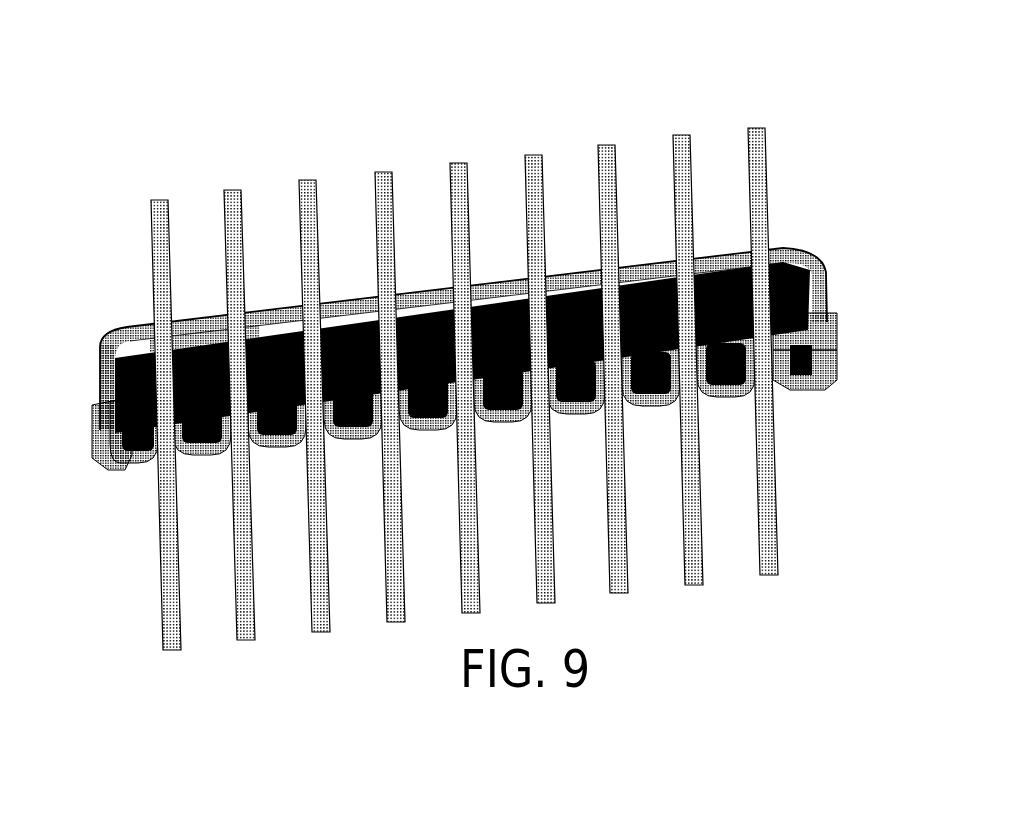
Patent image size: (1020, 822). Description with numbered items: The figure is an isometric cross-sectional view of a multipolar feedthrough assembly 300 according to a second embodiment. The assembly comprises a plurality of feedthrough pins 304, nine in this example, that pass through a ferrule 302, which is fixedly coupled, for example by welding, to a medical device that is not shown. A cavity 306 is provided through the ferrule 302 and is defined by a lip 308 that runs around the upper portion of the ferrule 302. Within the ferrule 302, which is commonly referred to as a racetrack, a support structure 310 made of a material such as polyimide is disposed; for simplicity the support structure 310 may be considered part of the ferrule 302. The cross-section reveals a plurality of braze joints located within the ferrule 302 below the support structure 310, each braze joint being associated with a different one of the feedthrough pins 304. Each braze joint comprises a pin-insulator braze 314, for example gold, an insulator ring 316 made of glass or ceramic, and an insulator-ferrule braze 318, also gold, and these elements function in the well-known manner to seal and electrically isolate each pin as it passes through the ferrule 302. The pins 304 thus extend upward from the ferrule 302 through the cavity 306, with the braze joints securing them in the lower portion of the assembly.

The multipolar feedthrough assembly 300 is at (792, 197).
The ferrule 302 is at (110, 440).
The feedthrough pins 304 is at (160, 203).
The cavity 306 is at (197, 335).
The lip 308 is at (806, 254).
The support structure 310 is at (110, 360).
The pin-insulator braze 314 is at (782, 328).
The insulator ring 316 is at (786, 372).
The insulator-ferrule braze 318 is at (730, 374).